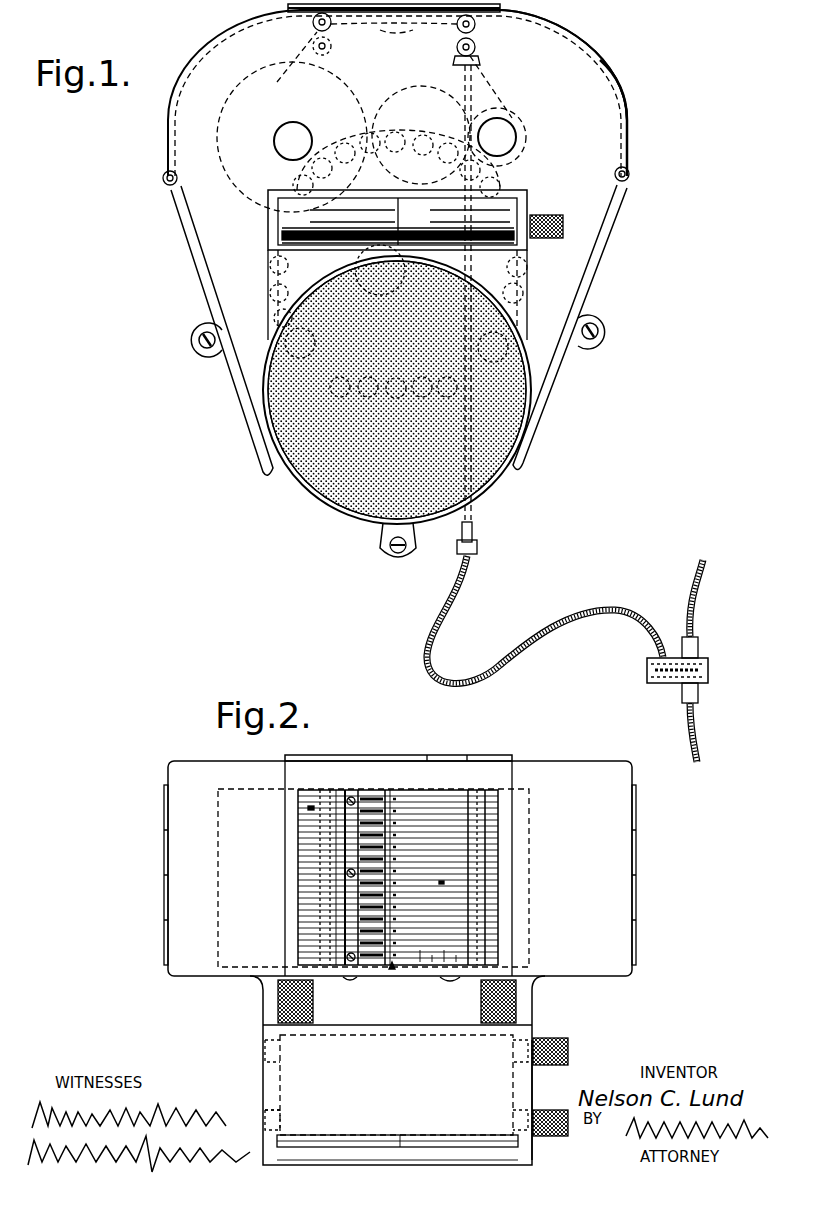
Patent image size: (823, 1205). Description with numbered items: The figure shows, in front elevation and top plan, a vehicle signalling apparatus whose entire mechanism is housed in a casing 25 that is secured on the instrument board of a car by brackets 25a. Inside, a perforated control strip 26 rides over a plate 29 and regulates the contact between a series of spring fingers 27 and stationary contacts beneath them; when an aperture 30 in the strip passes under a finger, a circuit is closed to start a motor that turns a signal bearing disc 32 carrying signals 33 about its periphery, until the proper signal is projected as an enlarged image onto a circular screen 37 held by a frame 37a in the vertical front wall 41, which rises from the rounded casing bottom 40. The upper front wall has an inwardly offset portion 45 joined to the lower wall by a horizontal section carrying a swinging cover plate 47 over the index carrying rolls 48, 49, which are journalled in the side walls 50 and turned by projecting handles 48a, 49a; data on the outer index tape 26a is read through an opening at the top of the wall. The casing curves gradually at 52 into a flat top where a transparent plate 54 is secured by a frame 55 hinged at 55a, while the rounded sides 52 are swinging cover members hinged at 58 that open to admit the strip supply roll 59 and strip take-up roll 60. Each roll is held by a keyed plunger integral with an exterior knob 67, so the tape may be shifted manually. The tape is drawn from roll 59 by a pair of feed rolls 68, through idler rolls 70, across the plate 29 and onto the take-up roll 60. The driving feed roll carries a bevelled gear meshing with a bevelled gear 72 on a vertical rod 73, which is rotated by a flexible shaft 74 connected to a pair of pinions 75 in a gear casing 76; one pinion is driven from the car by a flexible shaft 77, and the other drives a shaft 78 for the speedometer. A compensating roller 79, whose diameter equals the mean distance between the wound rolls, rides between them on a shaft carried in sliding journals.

In FIG. 1, the casing 25 is at (634, 96).
In FIG. 1, the brackets 25a is at (612, 326).
In FIG. 1, the perforated control strip 26 is at (498, 85).
In FIG. 1, the outer index tape 26a is at (530, 198).
In FIG. 2, the outer index tape 26a is at (456, 1146).
In FIG. 2, the spring fingers 27 is at (368, 794).
In FIG. 1, the plate 29 is at (400, 32).
In FIG. 2, the aperture 30 is at (306, 808).
In FIG. 1, the signal bearing disc 32 is at (530, 273).
In FIG. 1, the signals 33 is at (268, 297).
In FIG. 1, the screen 37 is at (530, 421).
In FIG. 1, the frame 37a is at (535, 396).
In FIG. 1, the casing bottom 40 is at (376, 532).
In FIG. 1, the front wall 41 is at (578, 280).
In FIG. 1, the inwardly offset portion 45 is at (603, 74).
In FIG. 1, the swinging cover plate 47 is at (509, 190).
In FIG. 2, the swinging cover plate 47 is at (526, 1106).
In FIG. 2, the index carrying roll 48 is at (264, 1115).
In FIG. 1, the projecting handle 48a is at (564, 220).
In FIG. 2, the projecting handle 48a is at (561, 1136).
In FIG. 2, the index carrying roll 49 is at (269, 1045).
In FIG. 2, the projecting handle 49a is at (570, 1030).
In FIG. 1, the side walls 50 is at (600, 259).
In FIG. 1, the rounded casing top sides 52 is at (170, 110).
In FIG. 2, the rounded casing top sides 52 is at (186, 769).
In FIG. 2, the transparent plate 54 is at (412, 796).
In FIG. 1, the frame 55 is at (308, 12).
In FIG. 2, the frame 55 is at (492, 772).
In FIG. 2, the hinge 55a is at (455, 768).
In FIG. 1, the hinges 58 is at (163, 182).
In FIG. 2, the hinges 58 is at (168, 870).
In FIG. 1, the strip supply roll 59 is at (360, 94).
In FIG. 1, the strip take-up roll 60 is at (528, 141).
In FIG. 1, the knob 67 is at (282, 127).
In FIG. 2, the knob 67 is at (277, 1003).
In FIG. 1, the feed rolls 68 is at (476, 25).
In FIG. 2, the feed rolls 68 is at (478, 896).
In FIG. 1, the idler rolls 70 is at (332, 22).
In FIG. 2, the idler rolls 70 is at (326, 796).
In FIG. 1, the bevelled gear 72 is at (479, 50).
In FIG. 1, the vertical rod 73 is at (473, 522).
In FIG. 1, the flexible shaft 74 is at (567, 622).
In FIG. 1, the pinions 75 is at (700, 672).
In FIG. 1, the gear casing 76 is at (700, 659).
In FIG. 1, the flexible shaft 77 is at (699, 746).
In FIG. 1, the shaft 78 is at (697, 586).
In FIG. 1, the roller 79 is at (437, 92).